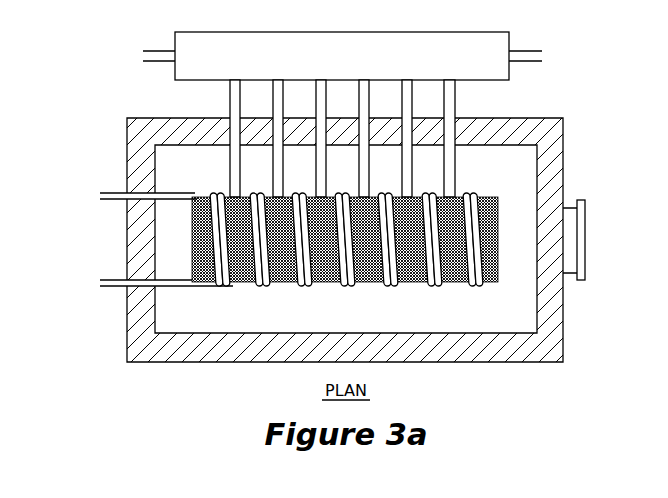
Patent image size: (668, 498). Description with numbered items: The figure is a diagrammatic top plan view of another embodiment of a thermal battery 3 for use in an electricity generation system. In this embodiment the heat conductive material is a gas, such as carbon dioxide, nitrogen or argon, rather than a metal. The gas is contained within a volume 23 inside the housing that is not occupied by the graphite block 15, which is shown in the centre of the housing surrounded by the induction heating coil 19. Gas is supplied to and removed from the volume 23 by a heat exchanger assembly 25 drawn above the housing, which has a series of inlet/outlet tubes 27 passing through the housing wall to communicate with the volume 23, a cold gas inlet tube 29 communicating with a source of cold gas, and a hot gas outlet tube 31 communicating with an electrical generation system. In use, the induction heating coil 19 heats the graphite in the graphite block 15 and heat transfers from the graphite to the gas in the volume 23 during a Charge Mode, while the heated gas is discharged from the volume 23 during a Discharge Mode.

The thermal battery 3 is at (329, 187).
The graphite block 15 is at (233, 283).
The induction heating coil 19 is at (209, 196).
The volume 23 is at (525, 190).
The heat exchanger assembly 25 is at (523, 28).
The inlet/outlet tubes 27 is at (456, 171).
The cold gas inlet tube 29 is at (151, 69).
The hot gas outlet tube 31 is at (533, 67).